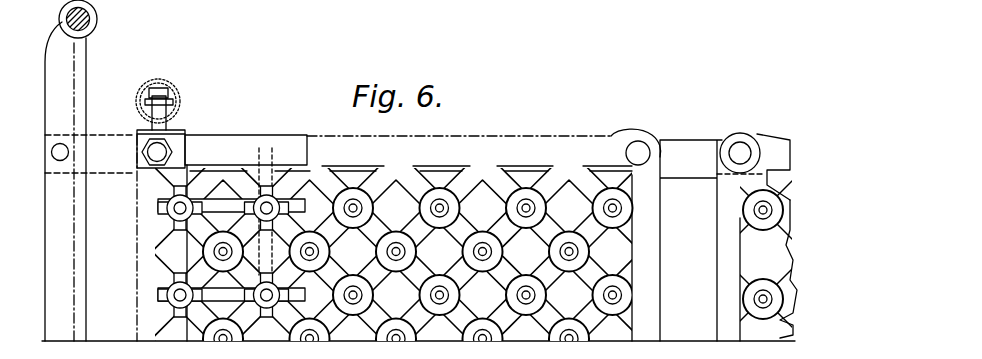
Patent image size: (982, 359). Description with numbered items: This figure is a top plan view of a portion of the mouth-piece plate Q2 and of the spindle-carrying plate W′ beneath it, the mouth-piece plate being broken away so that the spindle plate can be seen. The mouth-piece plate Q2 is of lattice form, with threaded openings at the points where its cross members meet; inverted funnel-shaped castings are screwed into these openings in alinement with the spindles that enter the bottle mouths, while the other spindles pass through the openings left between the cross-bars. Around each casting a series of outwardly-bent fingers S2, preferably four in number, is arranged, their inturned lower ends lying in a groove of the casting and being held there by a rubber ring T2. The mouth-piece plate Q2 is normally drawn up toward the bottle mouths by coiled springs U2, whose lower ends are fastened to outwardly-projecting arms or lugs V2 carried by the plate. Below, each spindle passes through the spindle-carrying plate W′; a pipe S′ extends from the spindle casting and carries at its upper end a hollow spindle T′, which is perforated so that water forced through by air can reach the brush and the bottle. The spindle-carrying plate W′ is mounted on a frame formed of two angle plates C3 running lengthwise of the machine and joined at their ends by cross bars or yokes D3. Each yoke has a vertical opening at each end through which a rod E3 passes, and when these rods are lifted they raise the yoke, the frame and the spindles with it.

The rod E3 is at (90, 21).
The cross bar or yoke D3 is at (86, 75).
The angle plate C3 is at (404, 237).
The outwardly-projecting arm or lug V2 is at (170, 122).
The coiled spring U2 is at (172, 103).
The mouth-piece plate Q2 is at (263, 134).
The spindle-carrying plate W′ is at (559, 146).
The rubber ring T2 is at (253, 192).
The outwardly-bent fingers S2 is at (176, 282).
The hollow spindle T′ is at (606, 209).
The pipe S′ is at (605, 207).